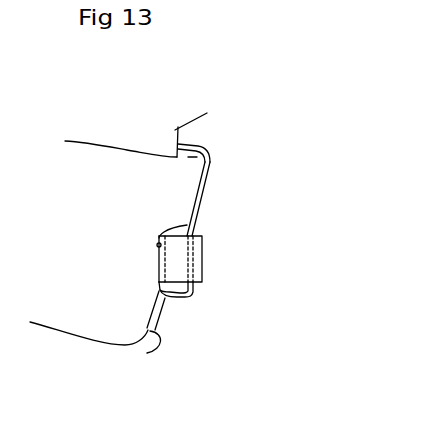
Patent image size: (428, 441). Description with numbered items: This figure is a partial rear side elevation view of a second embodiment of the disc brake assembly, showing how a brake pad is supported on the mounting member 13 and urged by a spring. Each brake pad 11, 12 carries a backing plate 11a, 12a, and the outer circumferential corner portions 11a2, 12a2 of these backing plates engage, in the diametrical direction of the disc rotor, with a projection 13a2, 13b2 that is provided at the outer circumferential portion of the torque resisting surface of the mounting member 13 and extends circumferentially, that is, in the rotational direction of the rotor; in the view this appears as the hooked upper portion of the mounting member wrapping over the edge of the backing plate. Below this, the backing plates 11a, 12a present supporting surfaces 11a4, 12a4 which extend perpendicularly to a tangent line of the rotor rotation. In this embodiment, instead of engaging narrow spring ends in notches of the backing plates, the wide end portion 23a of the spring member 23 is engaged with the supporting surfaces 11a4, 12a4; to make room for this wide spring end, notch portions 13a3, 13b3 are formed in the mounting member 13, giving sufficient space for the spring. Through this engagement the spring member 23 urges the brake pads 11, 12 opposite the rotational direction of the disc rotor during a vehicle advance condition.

The brake pad 11 is at (97, 340).
The brake pad 12 is at (57, 327).
The backing plate 11a is at (121, 131).
The backing plate 12a is at (88, 158).
The outer circumferential corner portion 11a2 is at (256, 144).
The outer circumferential corner portion 12a2 is at (207, 153).
The supporting surface 11a4 is at (111, 222).
The supporting surface 12a4 is at (159, 240).
The mounting member 13 is at (220, 196).
The projection 13a2 is at (224, 120).
The projection 13b2 is at (199, 123).
The notch portion 13a3 is at (238, 300).
The notch portion 13b3 is at (195, 298).
The spring member 23 is at (182, 263).
The wide end portion 23a is at (159, 270).